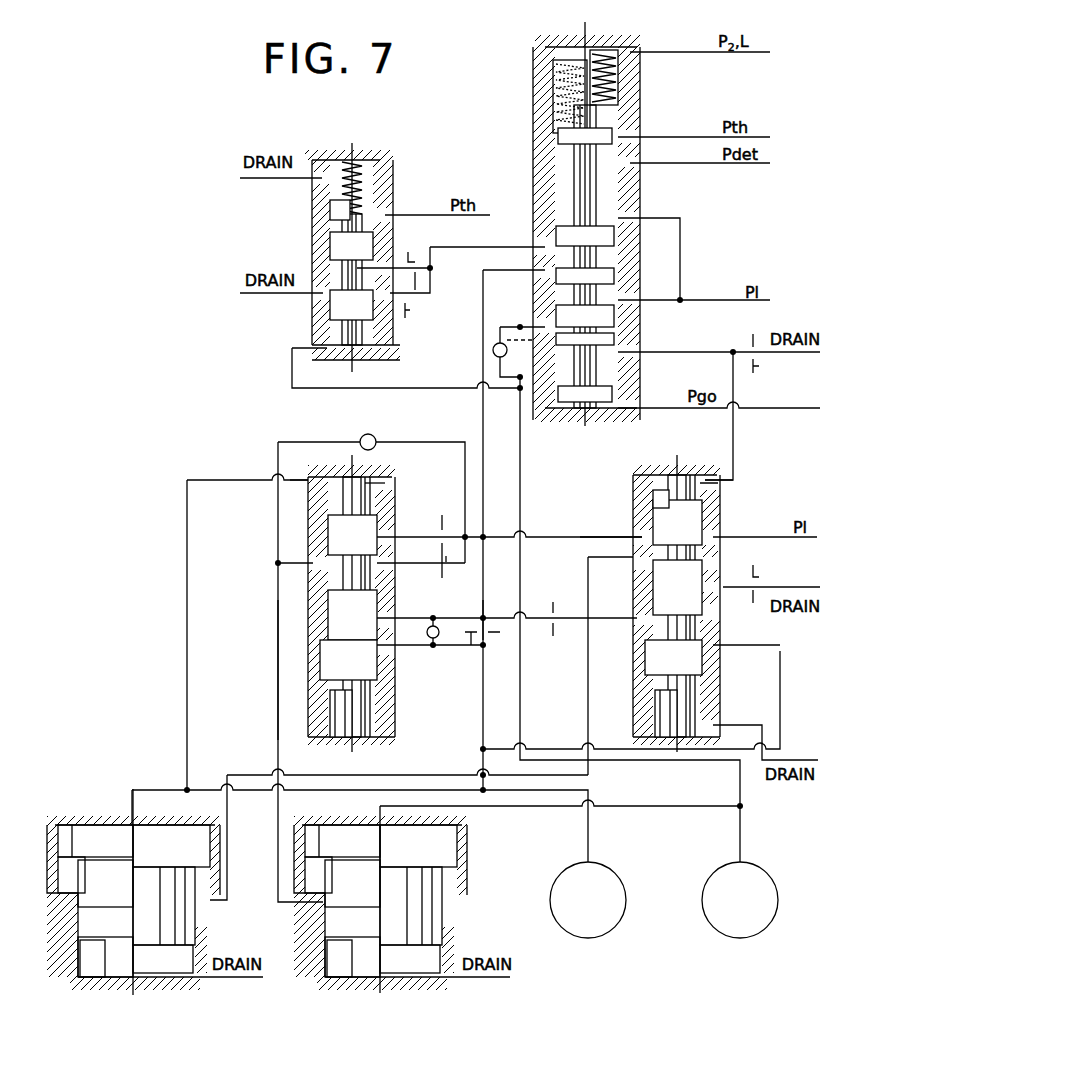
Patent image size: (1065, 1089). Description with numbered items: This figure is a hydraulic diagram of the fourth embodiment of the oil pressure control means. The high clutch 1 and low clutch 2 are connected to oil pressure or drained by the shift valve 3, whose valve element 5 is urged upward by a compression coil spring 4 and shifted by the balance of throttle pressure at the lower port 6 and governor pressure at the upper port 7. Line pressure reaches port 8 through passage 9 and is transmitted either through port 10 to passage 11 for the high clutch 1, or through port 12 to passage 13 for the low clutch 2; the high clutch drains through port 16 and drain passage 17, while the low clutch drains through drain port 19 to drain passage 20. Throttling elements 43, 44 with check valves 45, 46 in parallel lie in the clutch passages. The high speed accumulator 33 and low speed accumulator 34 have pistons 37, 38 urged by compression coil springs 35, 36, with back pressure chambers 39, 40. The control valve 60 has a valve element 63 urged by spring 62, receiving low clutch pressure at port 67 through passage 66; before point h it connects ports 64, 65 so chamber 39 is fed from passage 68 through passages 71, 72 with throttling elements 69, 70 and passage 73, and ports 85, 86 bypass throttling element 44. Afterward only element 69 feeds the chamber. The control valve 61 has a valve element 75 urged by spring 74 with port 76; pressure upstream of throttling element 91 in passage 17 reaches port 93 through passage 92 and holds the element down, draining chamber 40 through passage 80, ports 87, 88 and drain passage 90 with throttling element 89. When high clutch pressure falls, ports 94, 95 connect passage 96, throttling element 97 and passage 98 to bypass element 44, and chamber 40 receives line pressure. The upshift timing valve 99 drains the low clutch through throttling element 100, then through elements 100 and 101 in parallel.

The high clutch 1 is at (764, 938).
The low clutch 2 is at (610, 938).
The shift valve 3 is at (554, 24).
The compression coil spring 4 is at (565, 102).
The valve element 5 is at (636, 217).
The lower port 6 is at (636, 138).
The upper port 7 is at (636, 407).
The port 8 is at (634, 302).
The passage 9 is at (690, 303).
The port 10 is at (538, 326).
The passage 11 is at (524, 452).
The port 12 is at (538, 272).
The passage 13 is at (483, 424).
The port 16 is at (633, 354).
The drain passage 17 is at (688, 353).
The drain port 19 is at (538, 246).
The drain passage 20 is at (482, 244).
The high speed accumulator 33 is at (395, 903).
The low speed accumulator 34 is at (121, 805).
The compression coil spring 35 is at (361, 958).
The compression coil spring 36 is at (96, 960).
The piston 37 is at (411, 889).
The piston 38 is at (96, 822).
The back pressure chamber 39 is at (329, 877).
The back pressure chamber 40 is at (198, 922).
The throttling element 43 is at (531, 352).
The throttling element 44 is at (470, 645).
The check valve 45 is at (492, 349).
The check valve 46 is at (438, 628).
The control valve 60 is at (402, 477).
The control valve 61 is at (670, 455).
The compression coil spring 62 is at (330, 718).
The valve element 63 is at (386, 488).
The port 64 is at (394, 560).
The port 65 is at (394, 536).
The passage 66 is at (190, 540).
The port 67 is at (306, 479).
The passage 68 is at (552, 537).
The throttling element 69 is at (440, 576).
The throttling element 70 is at (438, 512).
The passage 71 is at (450, 562).
The passage 72 is at (448, 528).
The passage 73 is at (276, 665).
The compression coil spring 74 is at (655, 718).
The valve element 75 is at (650, 512).
The port 76 is at (632, 537).
The passage 80 is at (442, 773).
The port 85 is at (386, 616).
The port 86 is at (386, 648).
The port 87 is at (630, 557).
The port 88 is at (714, 600).
The throttling element 89 is at (753, 566).
The drain passage 90 is at (762, 580).
The throttling element 91 is at (759, 366).
The passage 92 is at (736, 440).
The port 93 is at (708, 474).
The port 94 is at (630, 620).
The port 95 is at (716, 646).
The passage 96 is at (538, 617).
The throttling element 97 is at (553, 602).
The passage 98 is at (556, 749).
The upshift timing valve 99 is at (404, 163).
The throttling element 100 is at (412, 312).
The throttling element 101 is at (408, 252).